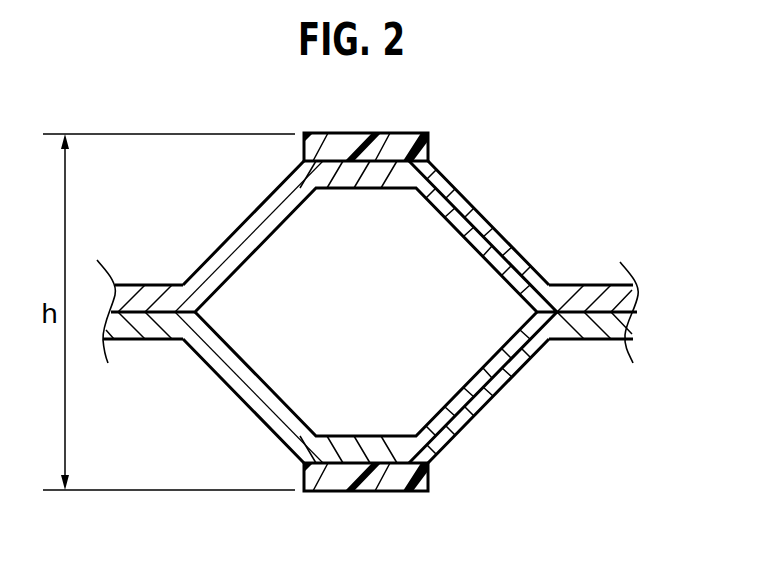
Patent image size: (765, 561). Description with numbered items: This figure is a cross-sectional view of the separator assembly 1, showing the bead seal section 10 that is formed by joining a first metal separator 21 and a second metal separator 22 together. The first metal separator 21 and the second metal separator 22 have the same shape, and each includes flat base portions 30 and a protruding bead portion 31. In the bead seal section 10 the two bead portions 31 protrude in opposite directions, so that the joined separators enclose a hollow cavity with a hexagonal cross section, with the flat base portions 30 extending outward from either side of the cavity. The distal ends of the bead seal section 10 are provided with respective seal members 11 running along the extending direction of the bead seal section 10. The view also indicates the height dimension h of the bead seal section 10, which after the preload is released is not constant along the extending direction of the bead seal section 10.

The separator assembly 1 is at (573, 120).
The bead seal section 10 is at (495, 206).
The seal member 11 is at (382, 141).
The first metal separator 21 is at (605, 368).
The second metal separator 22 is at (605, 178).
The flat base portion 30 is at (575, 286).
The bead portion 31 is at (497, 246).